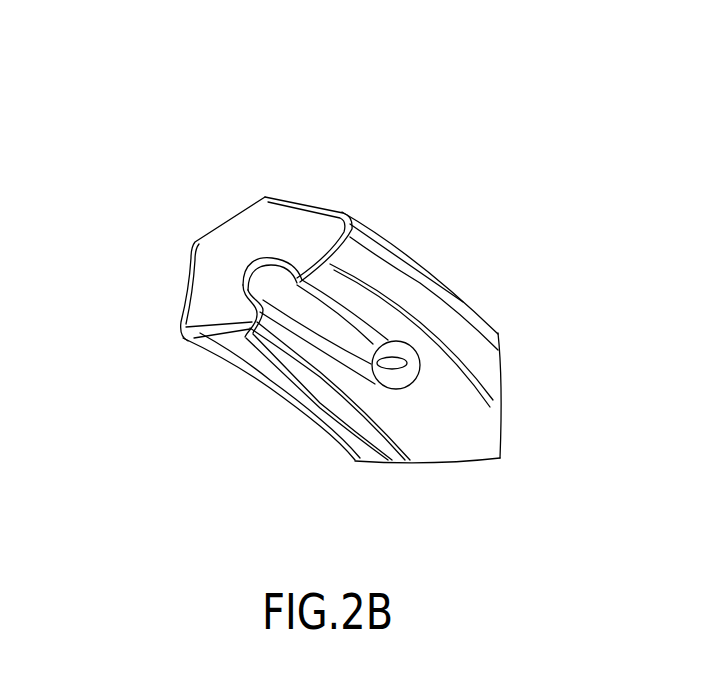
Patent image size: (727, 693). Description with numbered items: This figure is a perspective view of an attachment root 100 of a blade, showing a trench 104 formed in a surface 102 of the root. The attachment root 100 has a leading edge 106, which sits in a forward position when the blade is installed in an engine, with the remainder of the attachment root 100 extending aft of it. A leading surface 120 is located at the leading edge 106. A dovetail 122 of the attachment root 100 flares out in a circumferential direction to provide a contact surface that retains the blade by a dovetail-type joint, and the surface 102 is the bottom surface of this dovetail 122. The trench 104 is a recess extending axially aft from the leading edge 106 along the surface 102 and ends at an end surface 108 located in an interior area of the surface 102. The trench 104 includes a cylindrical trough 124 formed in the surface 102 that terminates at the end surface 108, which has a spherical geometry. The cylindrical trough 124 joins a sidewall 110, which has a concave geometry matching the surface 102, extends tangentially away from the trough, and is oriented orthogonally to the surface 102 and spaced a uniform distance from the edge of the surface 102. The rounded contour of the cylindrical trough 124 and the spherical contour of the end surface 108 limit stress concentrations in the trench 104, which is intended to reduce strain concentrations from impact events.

The attachment root 100 is at (110, 115).
The surface 102 is at (477, 452).
The trench 104 is at (287, 288).
The leading edge 106 is at (263, 314).
The end surface 108 is at (402, 372).
The sidewall 110 is at (306, 323).
The leading surface 120 is at (213, 240).
The dovetail 122 is at (342, 212).
The cylindrical trough 124 is at (373, 343).